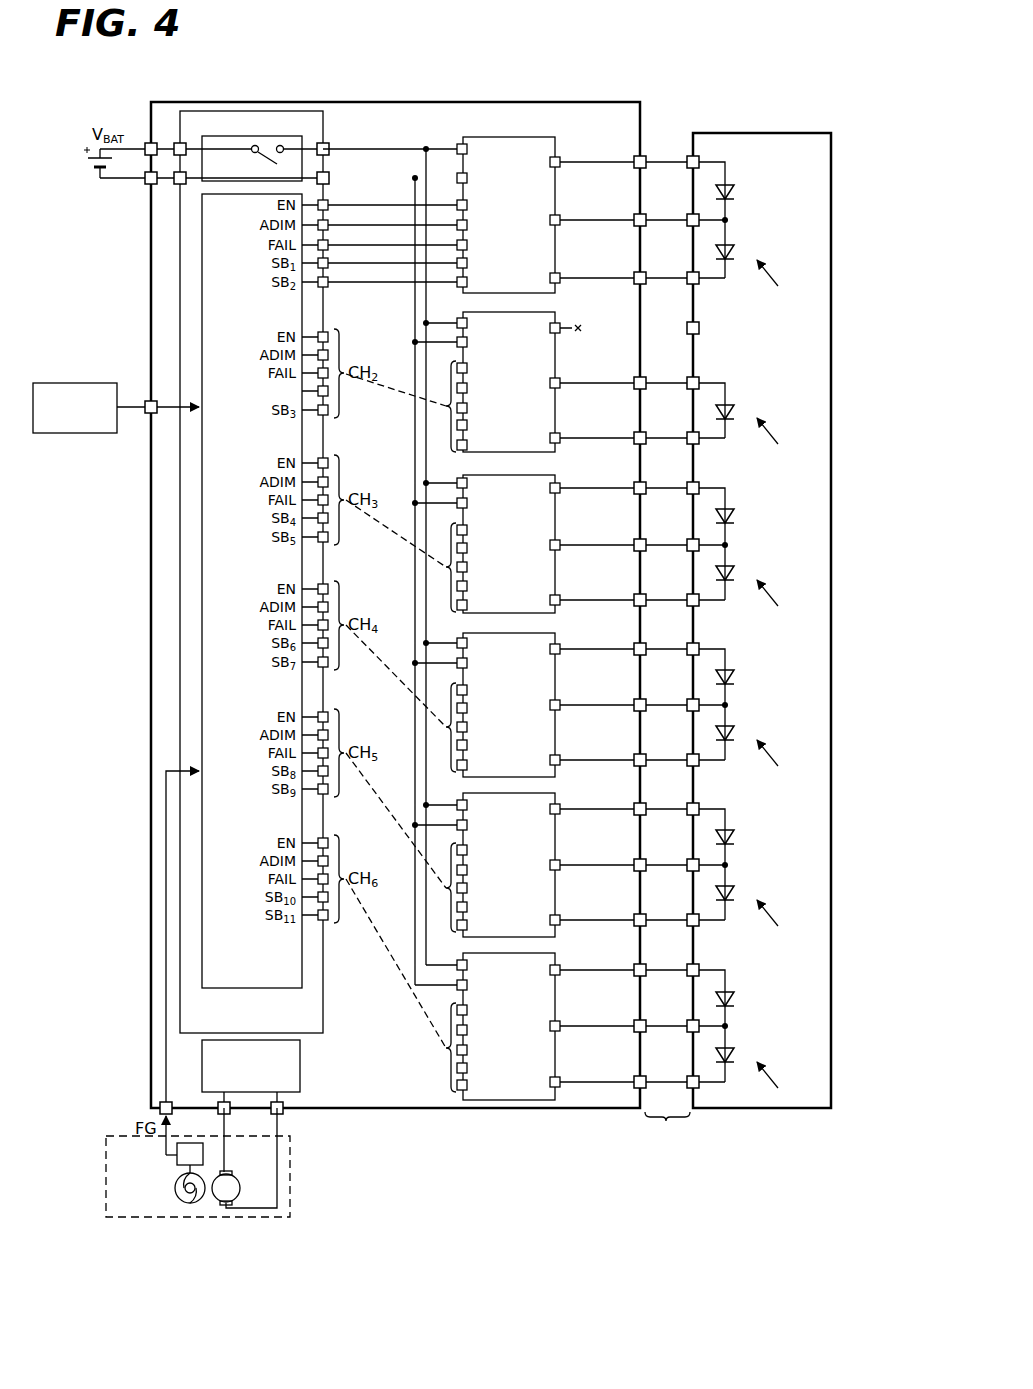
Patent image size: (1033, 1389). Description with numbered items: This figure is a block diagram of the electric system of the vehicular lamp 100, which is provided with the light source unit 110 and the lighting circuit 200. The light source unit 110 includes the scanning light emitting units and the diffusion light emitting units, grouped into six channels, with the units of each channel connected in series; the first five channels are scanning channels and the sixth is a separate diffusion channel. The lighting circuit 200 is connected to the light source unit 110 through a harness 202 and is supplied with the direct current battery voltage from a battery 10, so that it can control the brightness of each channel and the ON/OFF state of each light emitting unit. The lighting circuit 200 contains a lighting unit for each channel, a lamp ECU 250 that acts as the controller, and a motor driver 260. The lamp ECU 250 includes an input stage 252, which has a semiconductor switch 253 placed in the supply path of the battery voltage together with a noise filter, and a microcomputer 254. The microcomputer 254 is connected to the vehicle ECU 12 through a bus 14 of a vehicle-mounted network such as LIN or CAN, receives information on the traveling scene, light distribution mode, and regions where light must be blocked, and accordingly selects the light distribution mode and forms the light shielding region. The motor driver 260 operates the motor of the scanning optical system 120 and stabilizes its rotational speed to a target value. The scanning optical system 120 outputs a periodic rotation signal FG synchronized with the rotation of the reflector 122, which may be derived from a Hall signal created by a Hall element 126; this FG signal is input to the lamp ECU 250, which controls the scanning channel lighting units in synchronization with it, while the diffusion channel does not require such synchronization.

The battery 10 is at (97, 183).
The vehicle ECU 12 is at (100, 380).
The bus 14 is at (130, 412).
The vehicular lamp 100 is at (759, 587).
The light source unit 110 is at (736, 130).
The scanning optical system 120 is at (230, 1162).
The reflector 122 is at (180, 1197).
The Hall element 126 is at (170, 1160).
The lighting circuit 200 is at (478, 98).
The harness 202 is at (667, 1127).
The lamp ECU 250 is at (326, 128).
The input stage 252 is at (232, 131).
The semiconductor switch 253 is at (248, 154).
The microcomputer 254 is at (252, 990).
The motor driver 260 is at (302, 1064).